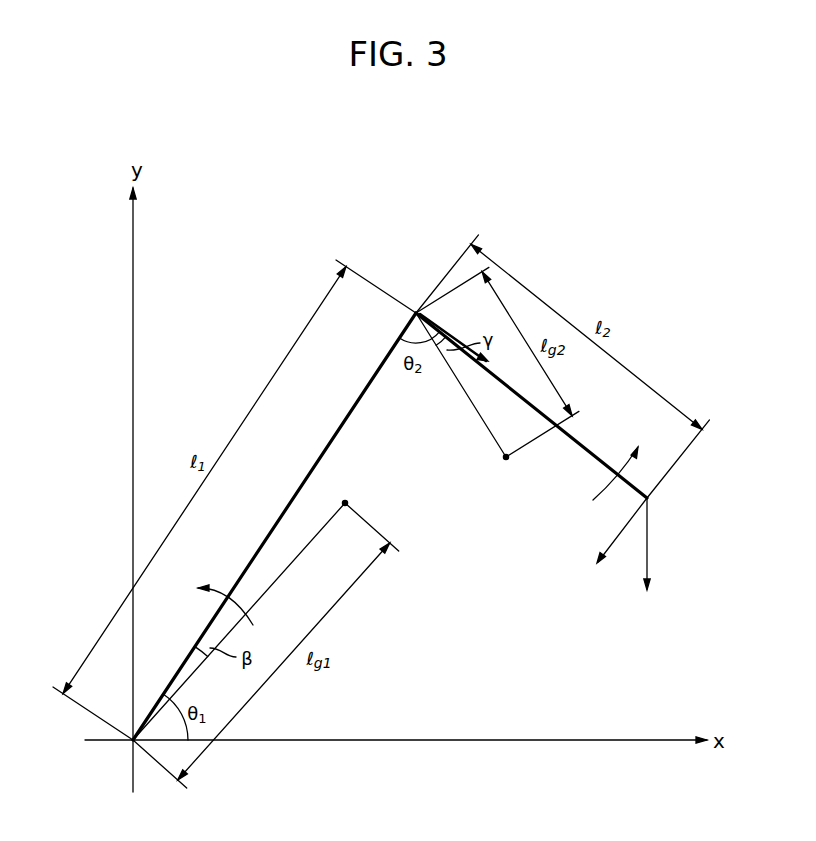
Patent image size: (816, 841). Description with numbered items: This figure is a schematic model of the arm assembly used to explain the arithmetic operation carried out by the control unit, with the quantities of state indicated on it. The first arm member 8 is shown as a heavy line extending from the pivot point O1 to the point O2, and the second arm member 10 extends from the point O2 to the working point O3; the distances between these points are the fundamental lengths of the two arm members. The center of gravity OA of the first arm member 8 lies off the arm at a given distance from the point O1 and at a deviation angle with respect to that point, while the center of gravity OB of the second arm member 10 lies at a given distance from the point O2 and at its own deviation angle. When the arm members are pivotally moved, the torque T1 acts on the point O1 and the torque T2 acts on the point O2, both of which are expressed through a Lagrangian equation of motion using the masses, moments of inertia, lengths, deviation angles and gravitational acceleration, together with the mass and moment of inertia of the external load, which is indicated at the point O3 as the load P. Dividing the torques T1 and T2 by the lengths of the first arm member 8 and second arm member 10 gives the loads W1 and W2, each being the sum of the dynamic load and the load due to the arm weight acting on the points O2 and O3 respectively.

The first arm member 8 is at (258, 548).
The second arm member 10 is at (570, 440).
The point O1 is at (120, 737).
The point O2 is at (412, 281).
The point O3 is at (683, 478).
The center of gravity of first arm member OA is at (355, 483).
The center of gravity of second arm member OB is at (511, 479).
The torque acting on point O1 T1 is at (214, 600).
The torque acting on point O2 T2 is at (627, 465).
The dynamic load acting on point O2 W1 is at (468, 345).
The dynamic load acting on point O3 W2 is at (615, 548).
The load P is at (650, 560).